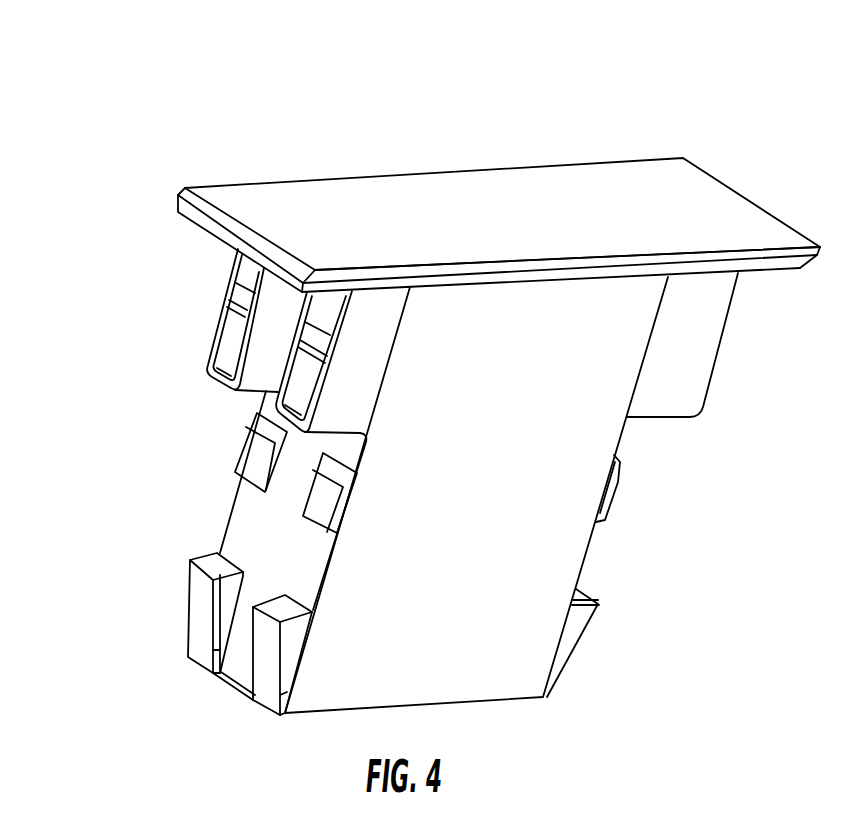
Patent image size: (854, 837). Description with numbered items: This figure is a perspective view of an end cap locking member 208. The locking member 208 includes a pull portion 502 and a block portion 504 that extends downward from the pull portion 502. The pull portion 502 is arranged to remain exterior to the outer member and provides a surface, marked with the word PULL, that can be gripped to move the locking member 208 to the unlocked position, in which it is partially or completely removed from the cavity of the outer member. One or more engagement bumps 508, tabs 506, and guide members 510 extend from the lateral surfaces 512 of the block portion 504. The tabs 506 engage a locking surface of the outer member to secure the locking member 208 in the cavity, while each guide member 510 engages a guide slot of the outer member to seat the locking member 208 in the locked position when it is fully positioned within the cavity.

The locking member 208 is at (652, 63).
The pull portion 502 is at (424, 184).
The block portion 504 is at (538, 520).
The tabs 506 is at (213, 560).
The engagement bumps 508 is at (248, 450).
The guide members 510 is at (224, 300).
The lateral surfaces 512 is at (278, 568).